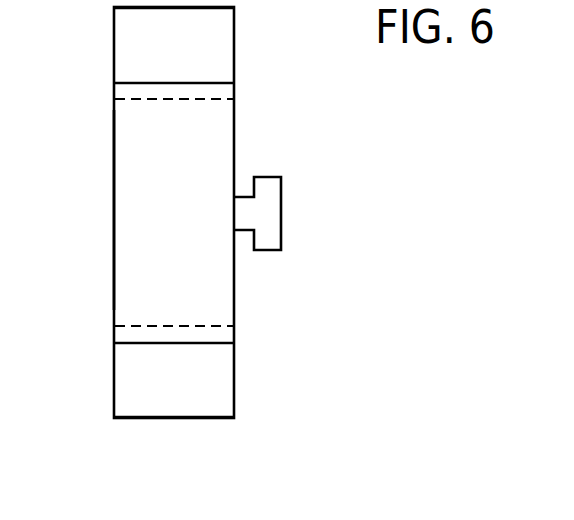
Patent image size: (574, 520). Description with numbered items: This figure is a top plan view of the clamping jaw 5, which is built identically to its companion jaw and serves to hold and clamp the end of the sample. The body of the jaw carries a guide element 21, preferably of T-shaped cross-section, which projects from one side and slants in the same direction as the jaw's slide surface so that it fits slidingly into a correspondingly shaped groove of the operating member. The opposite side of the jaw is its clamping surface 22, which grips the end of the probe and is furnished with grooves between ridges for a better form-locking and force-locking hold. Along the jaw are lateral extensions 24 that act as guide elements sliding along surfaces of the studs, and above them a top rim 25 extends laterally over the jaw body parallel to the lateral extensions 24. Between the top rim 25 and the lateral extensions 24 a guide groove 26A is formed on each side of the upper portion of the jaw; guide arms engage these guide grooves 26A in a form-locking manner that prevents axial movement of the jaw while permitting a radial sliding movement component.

The clamping jaw 5 is at (148, 173).
The guide element 21 is at (270, 195).
The clamping surface 22 is at (114, 276).
The lateral extension 24 is at (143, 61).
The top rim 25 is at (157, 82).
The guide groove 26A is at (237, 87).